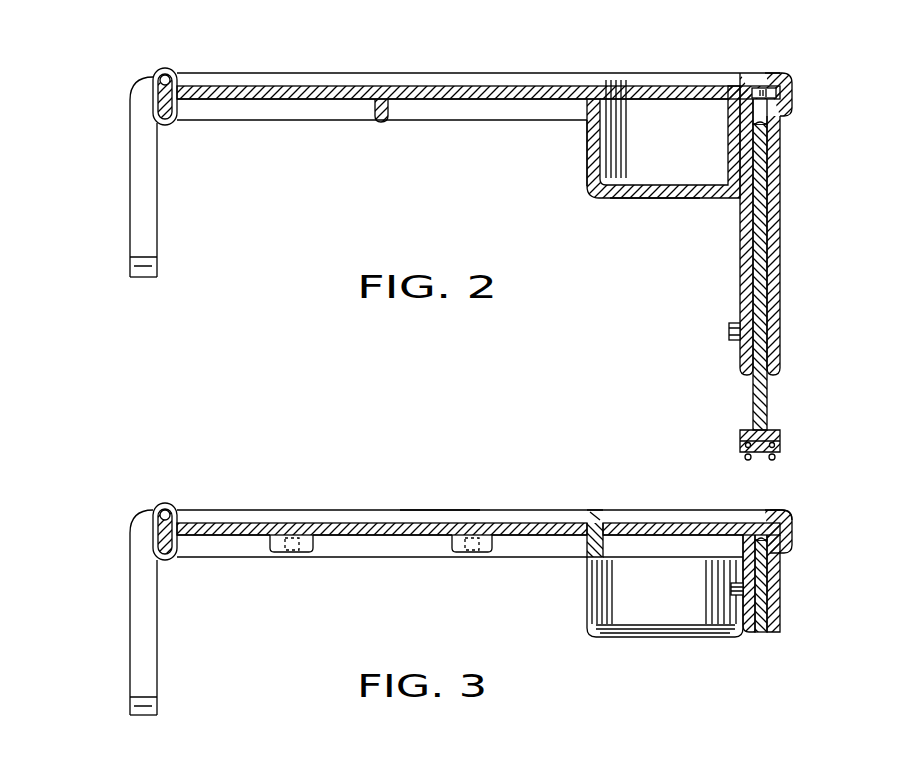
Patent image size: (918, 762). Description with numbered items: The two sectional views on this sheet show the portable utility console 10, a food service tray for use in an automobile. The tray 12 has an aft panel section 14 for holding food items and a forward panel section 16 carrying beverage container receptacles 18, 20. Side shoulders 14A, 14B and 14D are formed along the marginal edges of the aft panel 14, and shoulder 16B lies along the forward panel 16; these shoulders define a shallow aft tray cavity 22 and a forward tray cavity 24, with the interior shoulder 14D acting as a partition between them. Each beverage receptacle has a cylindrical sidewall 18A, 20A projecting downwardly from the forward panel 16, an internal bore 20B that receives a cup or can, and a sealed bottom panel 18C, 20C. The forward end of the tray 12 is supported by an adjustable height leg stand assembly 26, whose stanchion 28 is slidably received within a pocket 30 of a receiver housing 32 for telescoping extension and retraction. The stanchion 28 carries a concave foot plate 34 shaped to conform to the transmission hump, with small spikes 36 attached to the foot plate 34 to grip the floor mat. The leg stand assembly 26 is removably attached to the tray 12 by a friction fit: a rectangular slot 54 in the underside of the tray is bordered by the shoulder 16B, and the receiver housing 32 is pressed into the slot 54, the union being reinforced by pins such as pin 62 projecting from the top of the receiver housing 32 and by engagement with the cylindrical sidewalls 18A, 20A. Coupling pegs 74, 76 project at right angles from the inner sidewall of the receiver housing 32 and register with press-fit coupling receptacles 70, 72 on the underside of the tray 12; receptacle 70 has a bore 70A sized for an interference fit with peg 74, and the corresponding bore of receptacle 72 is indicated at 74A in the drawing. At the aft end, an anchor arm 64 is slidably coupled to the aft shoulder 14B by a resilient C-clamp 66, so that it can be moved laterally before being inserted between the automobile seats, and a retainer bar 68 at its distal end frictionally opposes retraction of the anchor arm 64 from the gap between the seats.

In FIG. 2, the portable utility console 10 is at (116, 44).
In FIG. 3, the portable utility console 10 is at (140, 490).
In FIG. 2, the tray 12 is at (233, 72).
In FIG. 3, the tray 12 is at (262, 508).
In FIG. 2, the aft panel section 14 is at (272, 86).
In FIG. 3, the aft panel section 14 is at (360, 522).
In FIG. 2, the side shoulder 14A is at (425, 73).
In FIG. 3, the side shoulder 14A is at (440, 510).
In FIG. 2, the aft shoulder 14B is at (160, 80).
In FIG. 3, the aft shoulder 14B is at (128, 512).
In FIG. 3, the interior shoulder 14D is at (590, 535).
In FIG. 3, the forward panel section 16 is at (648, 522).
In FIG. 2, the shoulder 16B is at (794, 88).
In FIG. 3, the shoulder 16B is at (795, 530).
In FIG. 3, the beverage container receptacle 18 is at (620, 508).
In FIG. 3, the cylindrical sidewall 18A is at (590, 616).
In FIG. 3, the bottom panel 18C is at (640, 638).
In FIG. 2, the beverage container receptacle 20 is at (733, 72).
In FIG. 2, the cylindrical sidewall 20A is at (586, 164).
In FIG. 2, the internal bore 20B is at (665, 55).
In FIG. 2, the bottom panel 20C is at (638, 193).
In FIG. 2, the aft tray cavity 22 is at (522, 76).
In FIG. 3, the aft tray cavity 22 is at (283, 510).
In FIG. 3, the forward tray cavity 24 is at (762, 510).
In FIG. 2, the leg stand assembly 26 is at (785, 316).
In FIG. 3, the leg stand assembly 26 is at (785, 612).
In FIG. 2, the stanchion 28 is at (768, 405).
In FIG. 3, the stanchion 28 is at (763, 632).
In FIG. 2, the pocket 30 is at (762, 150).
In FIG. 3, the pocket 30 is at (762, 584).
In FIG. 2, the receiver housing 32 is at (780, 229).
In FIG. 3, the receiver housing 32 is at (749, 583).
In FIG. 2, the concave foot plate 34 is at (740, 435).
In FIG. 2, the spikes 36 is at (776, 458).
In FIG. 3, the rectangular slot 54 is at (790, 511).
In FIG. 2, the pin 62 is at (763, 87).
In FIG. 2, the anchor arm 64 is at (128, 168).
In FIG. 3, the anchor arm 64 is at (128, 594).
In FIG. 2, the resilient C-clamp 66 is at (158, 70).
In FIG. 3, the resilient C-clamp 66 is at (198, 482).
In FIG. 2, the retainer bar 68 is at (140, 266).
In FIG. 3, the retainer bar 68 is at (140, 707).
In FIG. 3, the coupling receptacle 70 is at (270, 550).
In FIG. 3, the bore 70A is at (296, 552).
In FIG. 3, the coupling receptacle 72 is at (455, 550).
In FIG. 2, the coupling peg 74 is at (728, 332).
In FIG. 3, the recess detent 74A is at (472, 552).
In FIG. 3, the coupling peg 76 is at (730, 590).